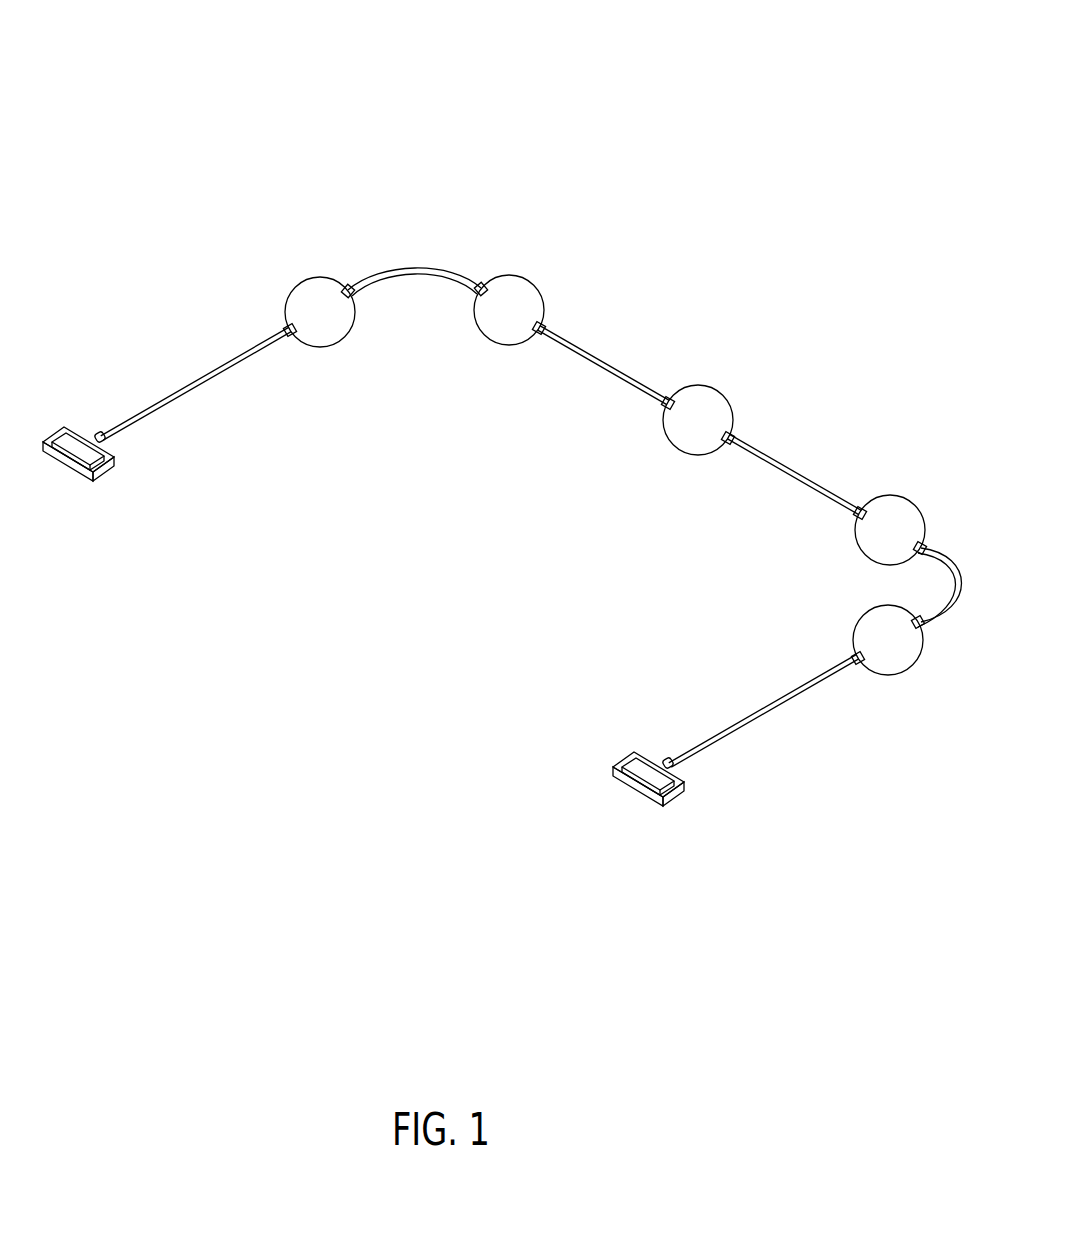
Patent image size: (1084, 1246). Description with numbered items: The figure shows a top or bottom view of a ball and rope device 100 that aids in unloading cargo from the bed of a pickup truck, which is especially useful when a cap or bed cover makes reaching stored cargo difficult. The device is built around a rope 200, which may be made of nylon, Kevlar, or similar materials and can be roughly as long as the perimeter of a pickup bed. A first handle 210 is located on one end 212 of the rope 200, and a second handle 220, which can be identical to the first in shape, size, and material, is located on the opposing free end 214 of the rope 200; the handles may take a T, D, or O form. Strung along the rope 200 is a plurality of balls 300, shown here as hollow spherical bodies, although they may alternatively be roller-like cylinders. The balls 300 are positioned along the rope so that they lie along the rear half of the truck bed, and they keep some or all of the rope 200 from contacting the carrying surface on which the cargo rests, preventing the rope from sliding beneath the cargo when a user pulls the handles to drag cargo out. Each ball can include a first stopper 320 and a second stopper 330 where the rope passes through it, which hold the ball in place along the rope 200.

The ball and rope device 100 is at (740, 140).
The rope 200 is at (195, 364).
The first handle 210 is at (81, 493).
The end of the rope 212 is at (168, 470).
The opposing free end of the rope 214 is at (634, 702).
The second handle 220 is at (597, 797).
The plurality of balls 300 is at (504, 258).
The first stopper 320 is at (669, 381).
The second stopper 330 is at (743, 423).